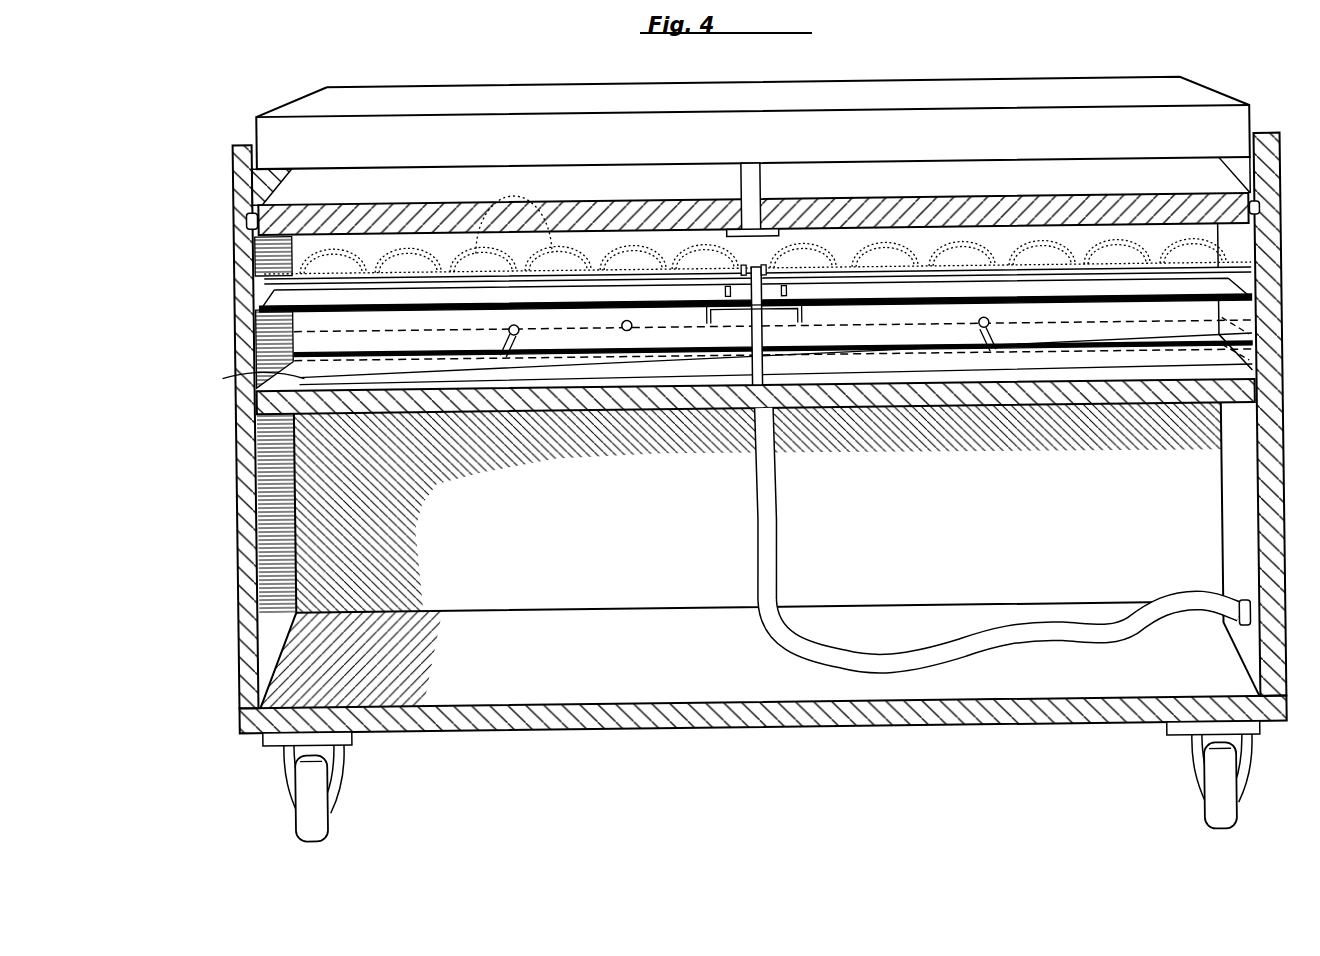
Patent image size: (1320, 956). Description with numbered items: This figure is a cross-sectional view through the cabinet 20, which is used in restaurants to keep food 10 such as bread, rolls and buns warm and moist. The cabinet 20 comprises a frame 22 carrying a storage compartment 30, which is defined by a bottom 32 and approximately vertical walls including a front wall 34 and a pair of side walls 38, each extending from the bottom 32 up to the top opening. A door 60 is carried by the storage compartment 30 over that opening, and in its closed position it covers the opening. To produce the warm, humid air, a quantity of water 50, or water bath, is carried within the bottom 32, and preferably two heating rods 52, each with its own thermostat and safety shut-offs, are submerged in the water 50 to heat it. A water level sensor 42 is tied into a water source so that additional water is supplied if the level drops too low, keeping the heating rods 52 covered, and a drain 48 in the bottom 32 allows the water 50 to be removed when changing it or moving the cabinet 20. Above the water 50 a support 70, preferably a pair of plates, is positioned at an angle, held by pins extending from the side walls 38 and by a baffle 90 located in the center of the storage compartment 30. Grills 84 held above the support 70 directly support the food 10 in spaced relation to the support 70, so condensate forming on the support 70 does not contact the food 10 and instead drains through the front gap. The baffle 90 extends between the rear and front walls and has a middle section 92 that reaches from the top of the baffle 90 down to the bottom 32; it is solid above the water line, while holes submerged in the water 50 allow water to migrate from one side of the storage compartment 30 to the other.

The food 10 is at (484, 208).
The cabinet 20 is at (1226, 80).
The frame 22 is at (1070, 728).
The storage compartment 30 is at (1093, 238).
The bottom 32 is at (244, 380).
The front wall 34 is at (1197, 316).
The side walls 38 is at (265, 313).
The water level sensor 42 is at (628, 332).
The drain 48 is at (745, 372).
The water 50 is at (1256, 376).
The heating rods 52 is at (505, 338).
The door 60 is at (347, 196).
The support 70 is at (402, 288).
The grill 84 is at (262, 258).
The baffle 90 is at (797, 300).
The middle section 92 is at (765, 340).